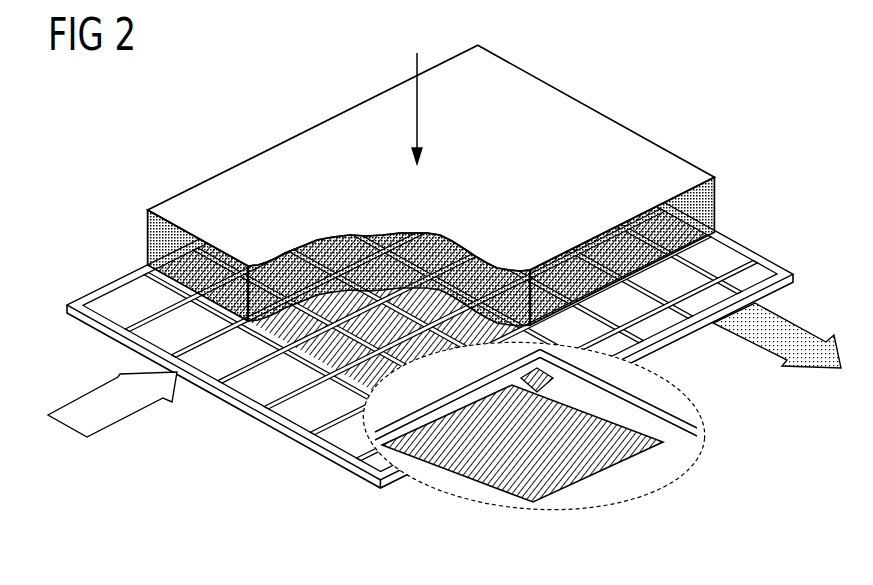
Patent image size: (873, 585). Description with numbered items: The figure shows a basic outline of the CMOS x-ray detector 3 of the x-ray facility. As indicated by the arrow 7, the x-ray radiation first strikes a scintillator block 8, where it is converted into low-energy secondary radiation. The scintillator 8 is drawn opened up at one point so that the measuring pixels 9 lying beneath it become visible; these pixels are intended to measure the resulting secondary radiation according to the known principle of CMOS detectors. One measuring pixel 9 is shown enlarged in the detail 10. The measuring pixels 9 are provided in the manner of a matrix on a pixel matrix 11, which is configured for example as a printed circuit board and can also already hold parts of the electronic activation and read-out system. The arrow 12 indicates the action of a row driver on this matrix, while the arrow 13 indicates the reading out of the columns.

The x-ray detector 3 is at (456, 182).
The arrow 7 is at (413, 67).
The scintillator block 8 is at (703, 212).
The measuring pixels 9 is at (571, 468).
The detail 10 is at (677, 473).
The pixel matrix 11 is at (121, 303).
The arrow 12 is at (83, 413).
The arrow 13 is at (800, 328).